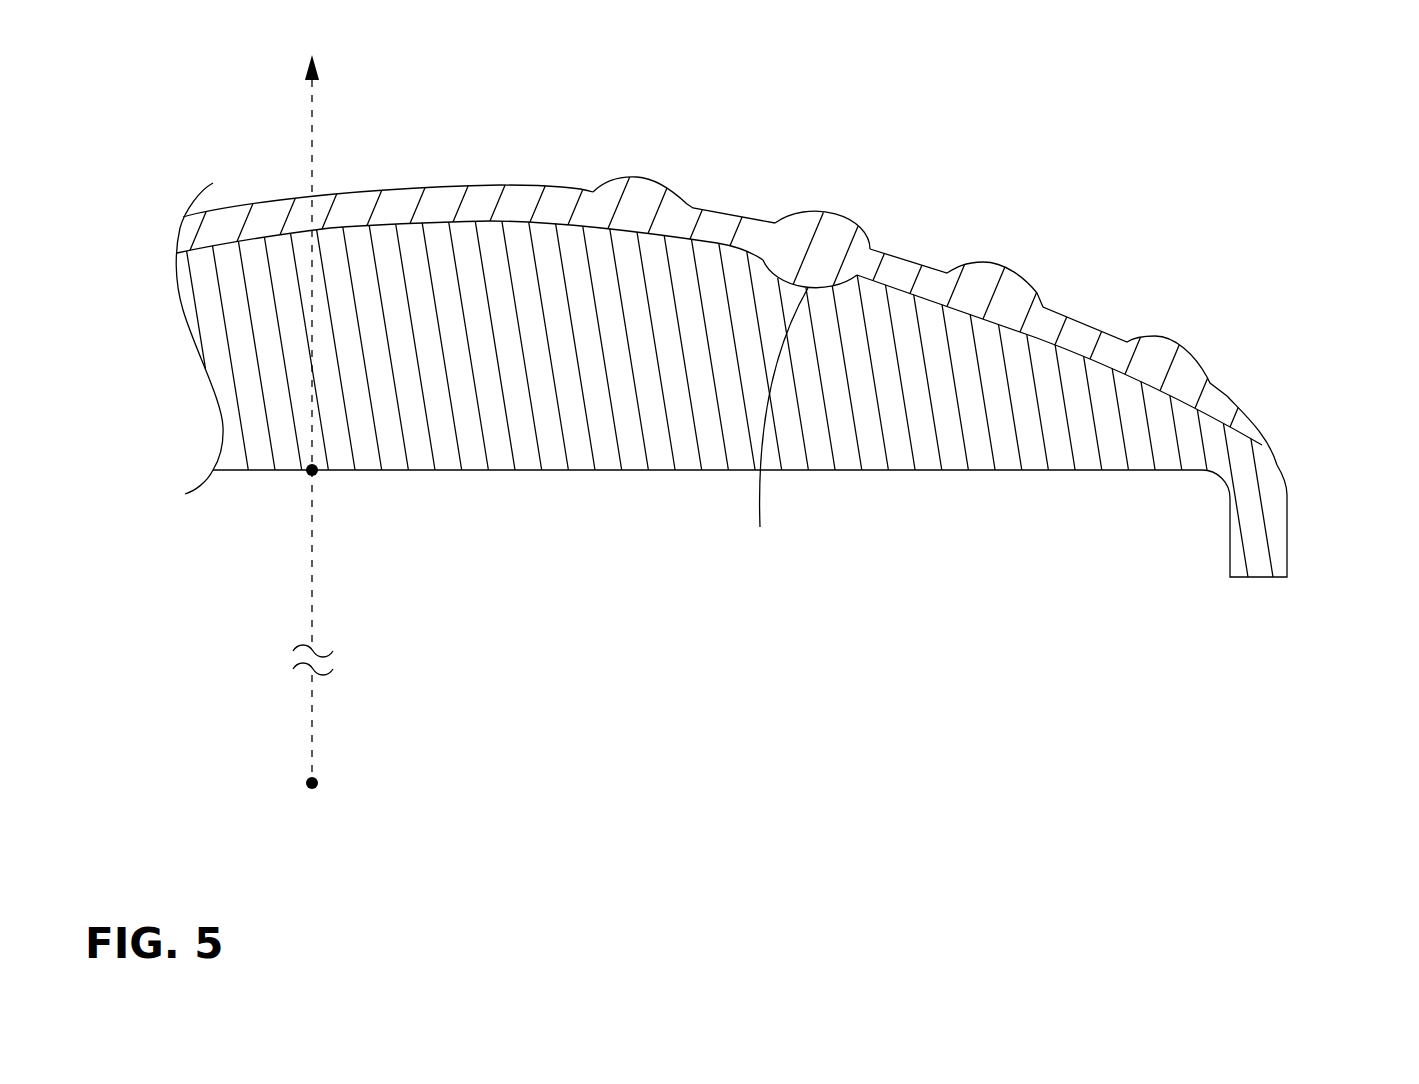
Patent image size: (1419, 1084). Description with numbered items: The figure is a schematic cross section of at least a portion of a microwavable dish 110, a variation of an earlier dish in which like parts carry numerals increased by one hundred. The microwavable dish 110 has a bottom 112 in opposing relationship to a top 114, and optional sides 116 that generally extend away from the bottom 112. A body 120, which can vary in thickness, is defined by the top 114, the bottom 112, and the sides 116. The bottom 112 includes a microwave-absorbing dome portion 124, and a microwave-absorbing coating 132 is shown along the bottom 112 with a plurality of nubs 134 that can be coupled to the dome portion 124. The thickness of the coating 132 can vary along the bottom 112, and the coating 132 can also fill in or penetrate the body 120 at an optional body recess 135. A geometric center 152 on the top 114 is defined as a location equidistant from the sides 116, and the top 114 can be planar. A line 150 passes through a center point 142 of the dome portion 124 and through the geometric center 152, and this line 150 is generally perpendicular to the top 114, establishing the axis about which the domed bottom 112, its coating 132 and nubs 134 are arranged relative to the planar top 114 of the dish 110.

The microwavable dish 110 is at (796, 328).
The bottom 112 is at (468, 213).
The top 114 is at (932, 472).
The sides 116 is at (1287, 497).
The body 120 is at (1147, 488).
The dome portion 124 is at (718, 243).
The microwave-absorbing coating 132 is at (1088, 318).
The nubs 134 is at (843, 222).
The body recess 135 is at (769, 423).
The center point 142 is at (318, 785).
The line 150 is at (313, 567).
The geometric center 152 is at (315, 473).